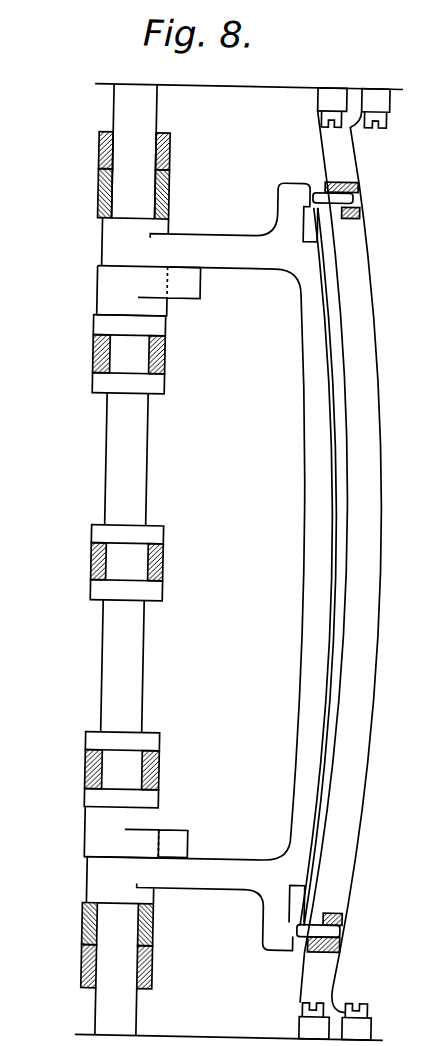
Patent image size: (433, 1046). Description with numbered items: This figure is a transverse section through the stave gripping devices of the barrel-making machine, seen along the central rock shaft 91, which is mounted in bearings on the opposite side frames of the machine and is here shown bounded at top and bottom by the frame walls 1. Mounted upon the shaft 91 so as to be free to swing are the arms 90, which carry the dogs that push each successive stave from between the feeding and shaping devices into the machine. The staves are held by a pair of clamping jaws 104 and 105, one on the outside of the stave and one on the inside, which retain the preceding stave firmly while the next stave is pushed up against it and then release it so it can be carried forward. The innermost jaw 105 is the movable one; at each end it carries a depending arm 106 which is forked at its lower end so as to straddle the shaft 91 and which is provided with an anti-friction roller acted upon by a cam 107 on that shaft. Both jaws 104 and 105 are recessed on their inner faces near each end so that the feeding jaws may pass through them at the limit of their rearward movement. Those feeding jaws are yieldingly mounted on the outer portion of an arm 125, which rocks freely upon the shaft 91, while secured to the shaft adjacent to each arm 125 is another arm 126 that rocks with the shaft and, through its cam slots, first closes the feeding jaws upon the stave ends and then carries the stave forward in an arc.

The frame wall 1 is at (239, 550).
The arms 90 is at (173, 771).
The rock shaft 91 is at (126, 560).
The clamping jaw 104 is at (381, 497).
The clamping jaw 105 is at (303, 499).
The depending arm 106 is at (201, 565).
The cam 107 is at (142, 562).
The arm 125 is at (172, 929).
The arm 126 is at (172, 970).